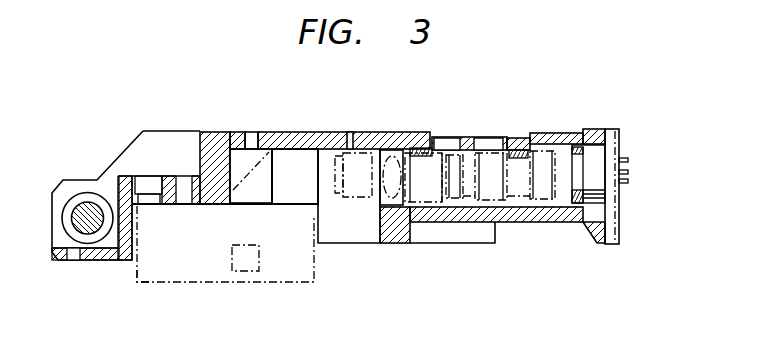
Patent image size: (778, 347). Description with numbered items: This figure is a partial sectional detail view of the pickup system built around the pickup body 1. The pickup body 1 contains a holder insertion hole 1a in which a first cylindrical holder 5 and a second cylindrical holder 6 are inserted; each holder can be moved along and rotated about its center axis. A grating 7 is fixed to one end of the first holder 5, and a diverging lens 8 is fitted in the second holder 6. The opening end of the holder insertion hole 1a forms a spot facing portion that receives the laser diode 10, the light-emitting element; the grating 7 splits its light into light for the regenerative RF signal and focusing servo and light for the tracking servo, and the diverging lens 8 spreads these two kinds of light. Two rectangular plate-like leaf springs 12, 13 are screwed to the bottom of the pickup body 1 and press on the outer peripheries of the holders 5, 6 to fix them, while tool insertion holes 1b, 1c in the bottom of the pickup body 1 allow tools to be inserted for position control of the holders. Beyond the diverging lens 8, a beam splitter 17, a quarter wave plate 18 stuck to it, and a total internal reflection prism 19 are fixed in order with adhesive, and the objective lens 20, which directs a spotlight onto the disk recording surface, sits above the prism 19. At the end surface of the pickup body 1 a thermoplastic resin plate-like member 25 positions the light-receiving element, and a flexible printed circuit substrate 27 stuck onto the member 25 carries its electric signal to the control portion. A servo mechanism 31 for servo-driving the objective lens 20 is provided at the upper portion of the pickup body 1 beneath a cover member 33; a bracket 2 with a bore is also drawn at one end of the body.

The pickup body 1 is at (302, 130).
The holder insertion hole 1a is at (562, 195).
The tool insertion hole 1b is at (486, 139).
The tool insertion hole 1c is at (447, 139).
The mounting bracket with pivot bore 2 is at (80, 223).
The first cylindrical holder 5 is at (542, 200).
The second cylindrical holder 6 is at (427, 200).
The grating 7 is at (482, 200).
The diverging lens 8 is at (398, 200).
The laser diode 10 is at (597, 152).
The leaf spring 12 is at (524, 149).
The leaf spring 13 is at (416, 146).
The beam splitter 17 is at (363, 200).
The quarter wave plate 18 is at (342, 200).
The total internal reflection prism 19 is at (238, 170).
The objective lens 20 is at (244, 273).
The resin plate-like member 25 is at (613, 227).
The flexible printed circuit substrate 27 is at (622, 151).
The servo mechanism 31 is at (162, 286).
The cover member 33 is at (146, 278).